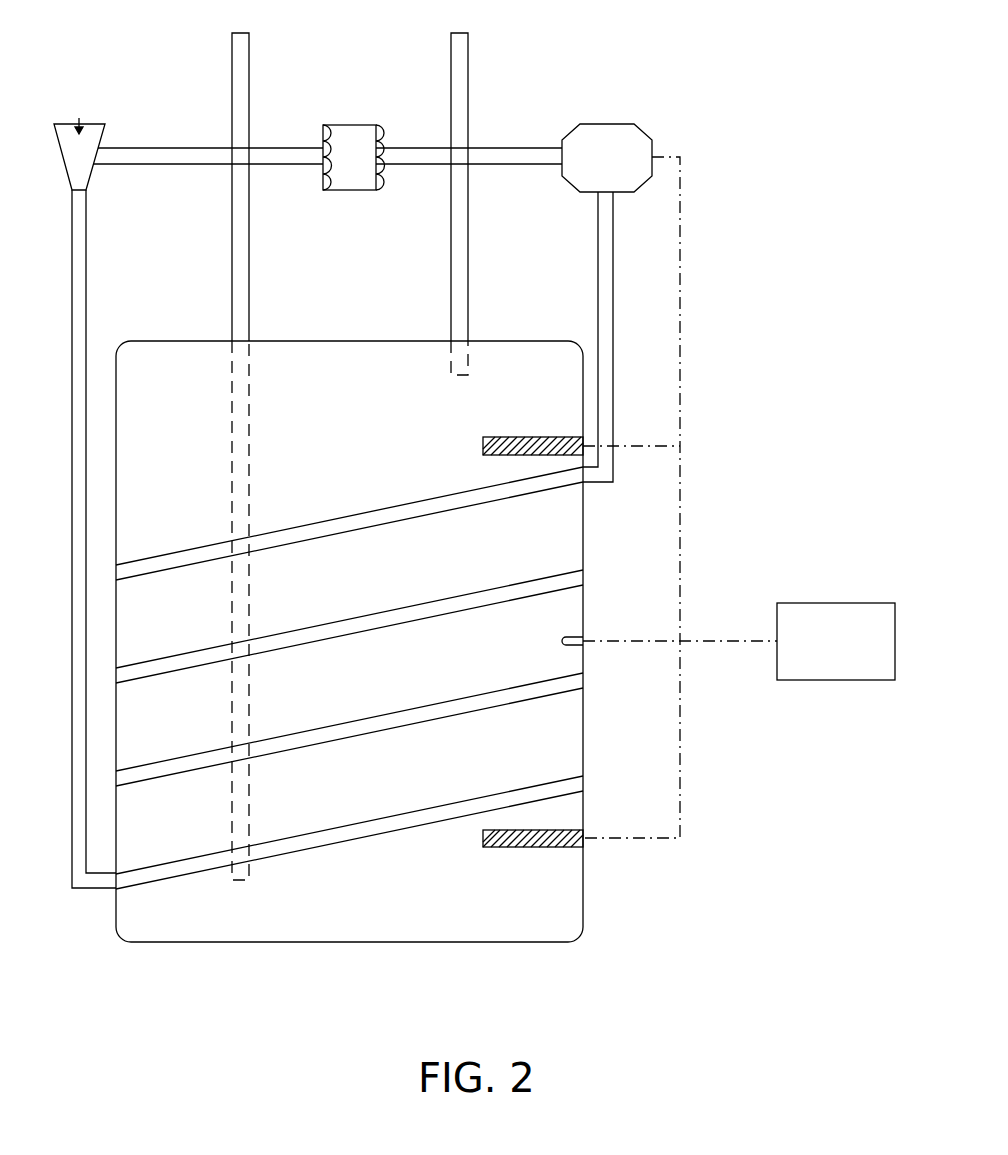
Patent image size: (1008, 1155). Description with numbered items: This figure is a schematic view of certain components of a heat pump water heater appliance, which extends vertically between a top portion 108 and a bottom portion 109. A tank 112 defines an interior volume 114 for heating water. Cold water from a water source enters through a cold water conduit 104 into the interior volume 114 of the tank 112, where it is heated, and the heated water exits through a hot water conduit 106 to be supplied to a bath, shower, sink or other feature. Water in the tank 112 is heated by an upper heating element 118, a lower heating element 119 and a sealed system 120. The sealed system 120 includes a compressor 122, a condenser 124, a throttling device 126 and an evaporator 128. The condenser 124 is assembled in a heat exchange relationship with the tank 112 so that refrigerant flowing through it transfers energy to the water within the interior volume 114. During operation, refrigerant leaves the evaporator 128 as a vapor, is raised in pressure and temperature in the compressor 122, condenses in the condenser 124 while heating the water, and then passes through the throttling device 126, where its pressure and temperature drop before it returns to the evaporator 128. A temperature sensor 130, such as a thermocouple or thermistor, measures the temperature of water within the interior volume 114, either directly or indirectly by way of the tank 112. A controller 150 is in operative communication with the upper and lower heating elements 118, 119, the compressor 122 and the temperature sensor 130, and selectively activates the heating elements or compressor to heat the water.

The cold water conduit 104 is at (232, 90).
The hot water conduit 106 is at (451, 90).
The top portion 108 is at (108, 325).
The bottom portion 109 is at (106, 962).
The tank 112 is at (583, 548).
The interior volume 114 is at (332, 383).
The upper heating element 118 is at (483, 446).
The lower heating element 119 is at (483, 840).
The sealed system 120 is at (656, 101).
The compressor 122 is at (572, 131).
The condenser 124 is at (360, 530).
The throttling device 126 is at (105, 130).
The evaporator 128 is at (335, 105).
The temperature sensor 130 is at (562, 641).
The controller 150 is at (739, 497).